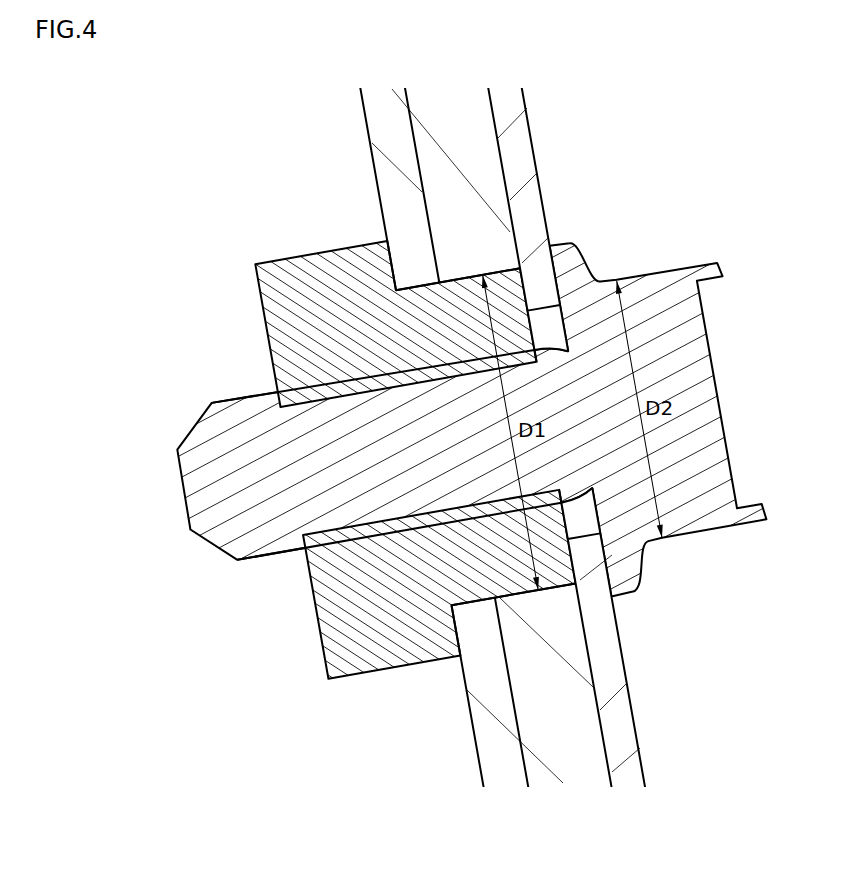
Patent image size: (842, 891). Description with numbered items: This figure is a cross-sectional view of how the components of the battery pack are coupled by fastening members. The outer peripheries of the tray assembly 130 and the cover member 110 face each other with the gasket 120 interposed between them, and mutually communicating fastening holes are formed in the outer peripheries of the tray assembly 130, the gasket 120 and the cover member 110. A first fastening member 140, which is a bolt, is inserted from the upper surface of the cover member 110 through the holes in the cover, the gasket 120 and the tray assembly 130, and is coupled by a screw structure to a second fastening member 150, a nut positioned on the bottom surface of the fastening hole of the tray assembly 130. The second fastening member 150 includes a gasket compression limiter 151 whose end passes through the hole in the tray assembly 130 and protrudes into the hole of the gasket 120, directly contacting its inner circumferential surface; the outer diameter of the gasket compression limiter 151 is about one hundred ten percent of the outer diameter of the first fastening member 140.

The cover member 110 is at (618, 708).
The gasket 120 is at (565, 757).
The tray assembly 130 is at (398, 185).
The first fastening member 140 is at (703, 355).
The second fastening member 150 is at (330, 635).
The gasket compression limiter 151 is at (462, 298).